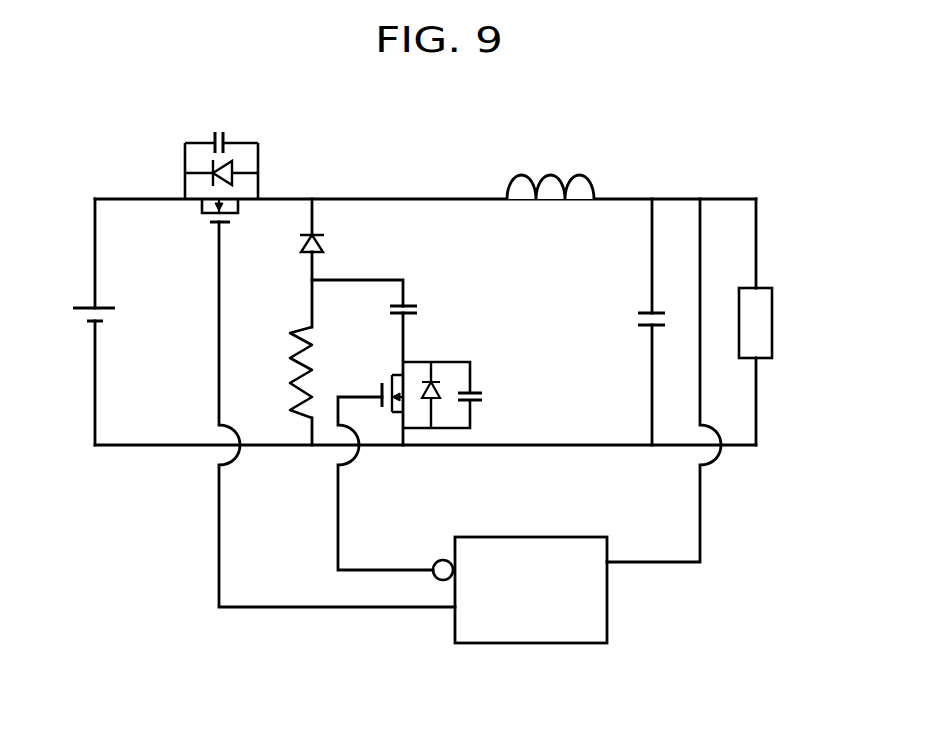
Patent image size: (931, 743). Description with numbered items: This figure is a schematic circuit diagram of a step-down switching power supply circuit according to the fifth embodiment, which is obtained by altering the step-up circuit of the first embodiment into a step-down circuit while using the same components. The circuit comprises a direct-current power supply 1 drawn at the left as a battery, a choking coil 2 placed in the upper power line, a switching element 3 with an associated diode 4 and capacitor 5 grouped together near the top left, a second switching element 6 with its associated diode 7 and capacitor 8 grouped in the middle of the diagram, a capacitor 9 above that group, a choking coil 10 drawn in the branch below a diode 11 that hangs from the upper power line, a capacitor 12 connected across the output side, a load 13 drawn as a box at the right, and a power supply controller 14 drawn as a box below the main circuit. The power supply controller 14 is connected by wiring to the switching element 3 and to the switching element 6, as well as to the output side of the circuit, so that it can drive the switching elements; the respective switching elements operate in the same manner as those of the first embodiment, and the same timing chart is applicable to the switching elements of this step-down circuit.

The direct-current power supply 1 is at (87, 302).
The choking coil 2 is at (567, 178).
The switching element 3 is at (245, 207).
The diode 4 is at (240, 158).
The capacitor 5 is at (207, 133).
The switching element 6 is at (407, 382).
The diode 7 is at (451, 390).
The capacitor 8 is at (492, 392).
The capacitor 9 is at (413, 300).
The choking coil 10 is at (292, 393).
The diode 11 is at (325, 239).
The capacitor 12 is at (643, 307).
The load 13 is at (778, 322).
The power supply controller 14 is at (543, 532).